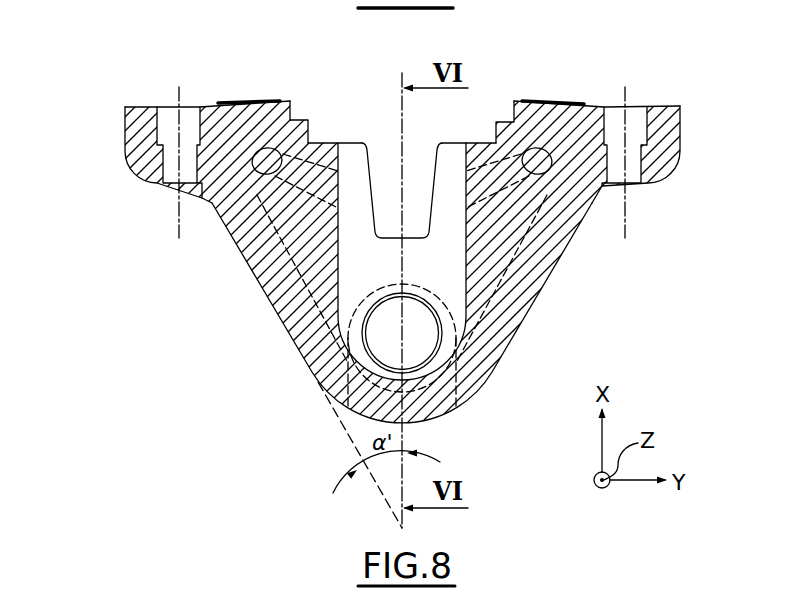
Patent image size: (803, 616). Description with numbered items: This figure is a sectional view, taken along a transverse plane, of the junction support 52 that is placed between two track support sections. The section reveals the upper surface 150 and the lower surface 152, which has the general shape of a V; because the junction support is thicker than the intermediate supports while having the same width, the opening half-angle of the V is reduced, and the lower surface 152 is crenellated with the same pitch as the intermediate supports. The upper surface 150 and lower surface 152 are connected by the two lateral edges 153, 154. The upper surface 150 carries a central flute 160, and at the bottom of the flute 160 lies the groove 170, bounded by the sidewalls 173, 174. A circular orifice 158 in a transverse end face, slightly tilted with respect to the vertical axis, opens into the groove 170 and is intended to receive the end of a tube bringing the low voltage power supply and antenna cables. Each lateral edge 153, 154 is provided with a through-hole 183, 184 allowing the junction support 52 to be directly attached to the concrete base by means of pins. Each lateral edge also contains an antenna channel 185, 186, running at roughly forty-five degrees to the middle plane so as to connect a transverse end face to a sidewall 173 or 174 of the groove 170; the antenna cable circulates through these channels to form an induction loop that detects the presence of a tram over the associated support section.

The support bracket 52 is at (560, 60).
The upper surface 150 is at (212, 97).
The lower surface 152 is at (283, 340).
The lateral edge 153 is at (120, 128).
The lateral edge 154 is at (688, 128).
The circular orifice 158 is at (415, 340).
The central flute 160 is at (303, 113).
The groove 170 is at (352, 240).
The sidewall 173 is at (340, 255).
The sidewall 174 is at (458, 240).
The through-hole 183 is at (171, 110).
The through-hole 184 is at (632, 117).
The antenna channel 185 is at (265, 163).
The antenna channel 186 is at (539, 163).